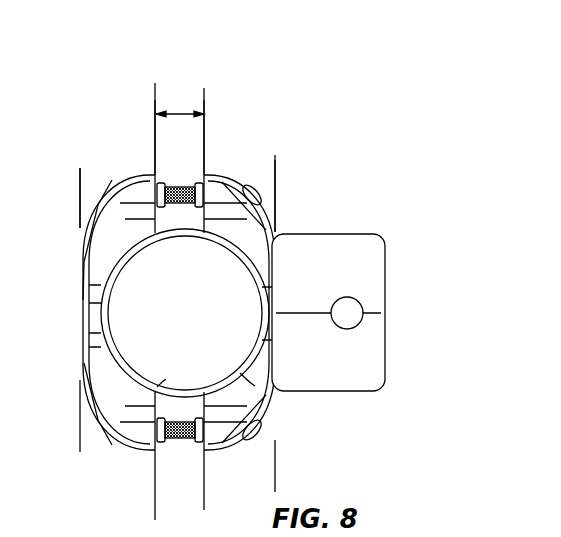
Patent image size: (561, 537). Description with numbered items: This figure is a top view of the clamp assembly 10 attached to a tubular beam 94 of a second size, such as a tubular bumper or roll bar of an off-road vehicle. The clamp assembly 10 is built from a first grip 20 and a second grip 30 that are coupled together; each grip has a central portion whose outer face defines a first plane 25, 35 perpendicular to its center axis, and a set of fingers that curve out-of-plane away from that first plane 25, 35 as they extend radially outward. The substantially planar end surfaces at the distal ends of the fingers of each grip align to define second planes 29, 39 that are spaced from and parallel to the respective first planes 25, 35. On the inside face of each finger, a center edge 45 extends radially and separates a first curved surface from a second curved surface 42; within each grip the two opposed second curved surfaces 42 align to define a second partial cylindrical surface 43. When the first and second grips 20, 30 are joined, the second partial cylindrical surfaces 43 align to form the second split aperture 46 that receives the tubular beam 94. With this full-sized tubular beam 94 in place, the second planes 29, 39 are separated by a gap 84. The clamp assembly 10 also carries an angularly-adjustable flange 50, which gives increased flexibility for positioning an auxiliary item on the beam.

The clamp assembly 10 is at (328, 103).
The first grip 20 is at (80, 327).
The first plane 25 is at (77, 178).
The second plane 29 is at (153, 106).
The second grip 30 is at (276, 410).
The first plane 35 is at (277, 177).
The second plane 39 is at (207, 113).
The second curved surface 42 is at (237, 247).
The second partial cylindrical surface 43 is at (240, 373).
The center edge 45 is at (127, 262).
The second split aperture 46 is at (143, 320).
The angularly-adjustable flange 50 is at (386, 266).
The gap 84 is at (179, 112).
The tubular beam 94 is at (157, 387).